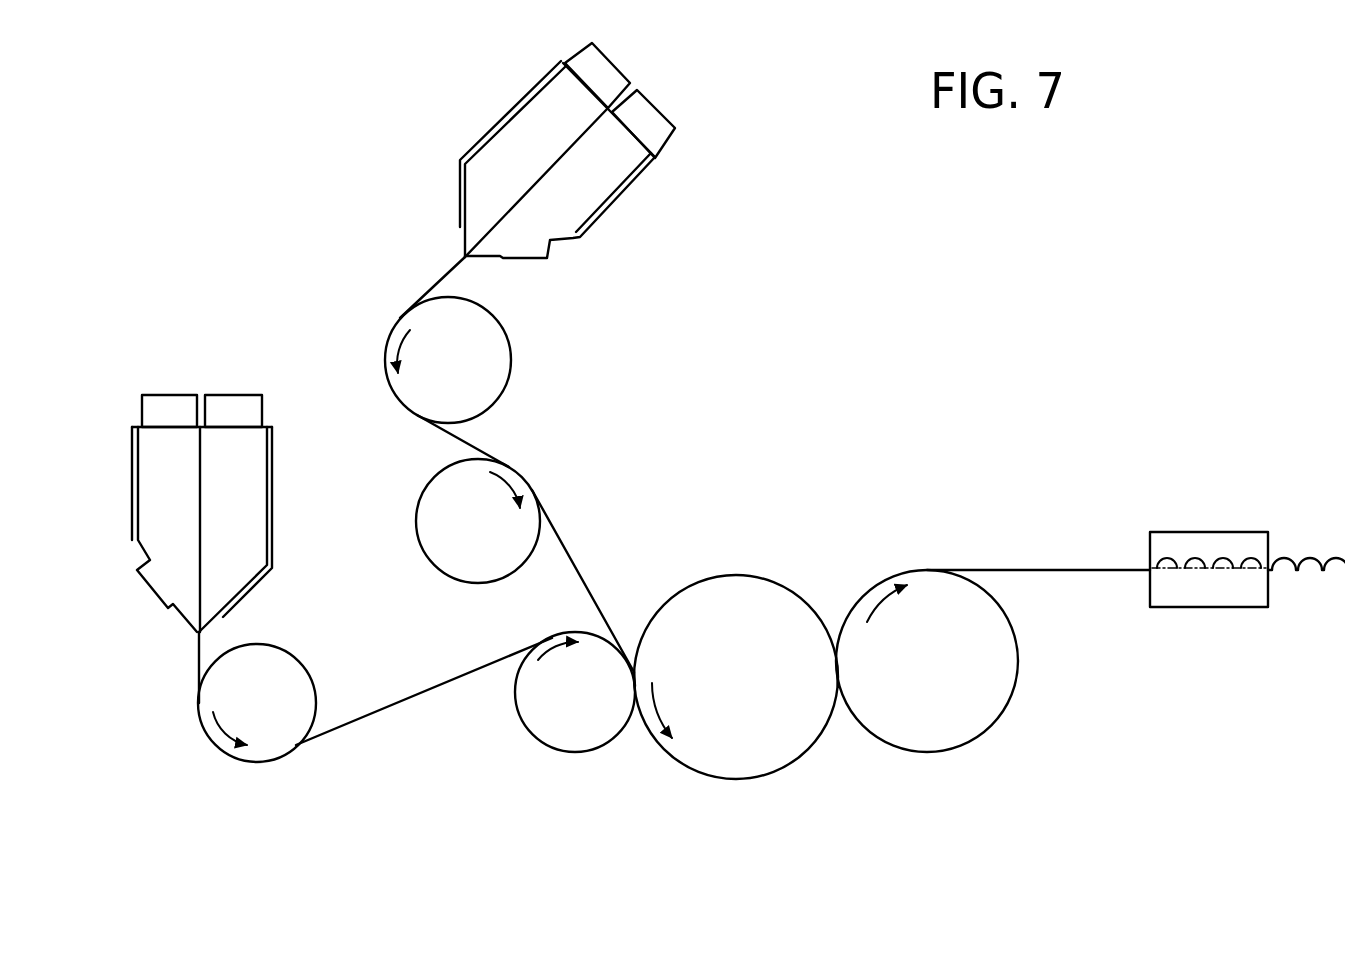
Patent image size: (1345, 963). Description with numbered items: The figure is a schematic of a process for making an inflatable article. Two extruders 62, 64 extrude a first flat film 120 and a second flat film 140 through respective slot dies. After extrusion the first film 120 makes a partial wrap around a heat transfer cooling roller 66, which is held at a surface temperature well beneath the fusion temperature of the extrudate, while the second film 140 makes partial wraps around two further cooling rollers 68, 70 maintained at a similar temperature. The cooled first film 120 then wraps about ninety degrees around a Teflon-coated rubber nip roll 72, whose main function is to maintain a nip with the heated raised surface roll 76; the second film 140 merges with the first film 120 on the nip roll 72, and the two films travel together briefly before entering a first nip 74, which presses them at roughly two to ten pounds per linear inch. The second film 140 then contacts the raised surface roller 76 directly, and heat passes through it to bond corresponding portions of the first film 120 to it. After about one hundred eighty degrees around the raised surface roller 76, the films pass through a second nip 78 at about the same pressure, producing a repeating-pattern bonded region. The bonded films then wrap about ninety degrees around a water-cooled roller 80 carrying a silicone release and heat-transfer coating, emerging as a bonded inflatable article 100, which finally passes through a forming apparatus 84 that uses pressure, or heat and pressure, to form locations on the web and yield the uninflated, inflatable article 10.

The inflatable article 10 is at (1328, 583).
The extruder 62 is at (148, 482).
The extruder 64 is at (515, 133).
The heat transfer (cooling) roller 66 is at (285, 663).
The heat transfer (cooling) roller 68 is at (498, 370).
The heat transfer (cooling) roller 70 is at (427, 500).
The nip roll 72 is at (550, 742).
The first nip 74 is at (633, 668).
The raised surface roller 76 is at (732, 590).
The second nip 78 is at (838, 687).
The heat transfer (cooling) roller 80 is at (1010, 680).
The forming apparatus 84 is at (1202, 532).
The inflatable article 100 is at (1033, 568).
The first flat film 120 is at (198, 658).
The second flat film 140 is at (440, 280).